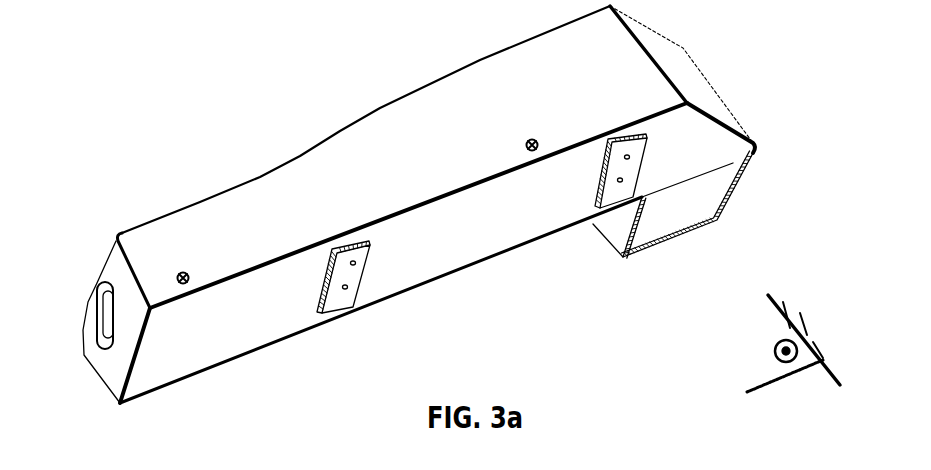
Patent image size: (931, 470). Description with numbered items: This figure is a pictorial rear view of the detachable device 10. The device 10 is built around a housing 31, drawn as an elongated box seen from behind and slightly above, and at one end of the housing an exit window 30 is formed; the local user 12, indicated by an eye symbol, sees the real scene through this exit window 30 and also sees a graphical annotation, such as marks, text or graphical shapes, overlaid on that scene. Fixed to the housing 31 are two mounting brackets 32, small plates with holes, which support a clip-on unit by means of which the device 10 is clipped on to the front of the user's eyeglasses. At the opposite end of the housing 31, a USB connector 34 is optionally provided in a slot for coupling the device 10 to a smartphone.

The device 10 is at (568, 357).
The local user 12 is at (807, 370).
The exit window 30 is at (692, 208).
The housing 31 is at (380, 108).
The mounting brackets 32 is at (343, 300).
The USB connector 34 is at (93, 323).